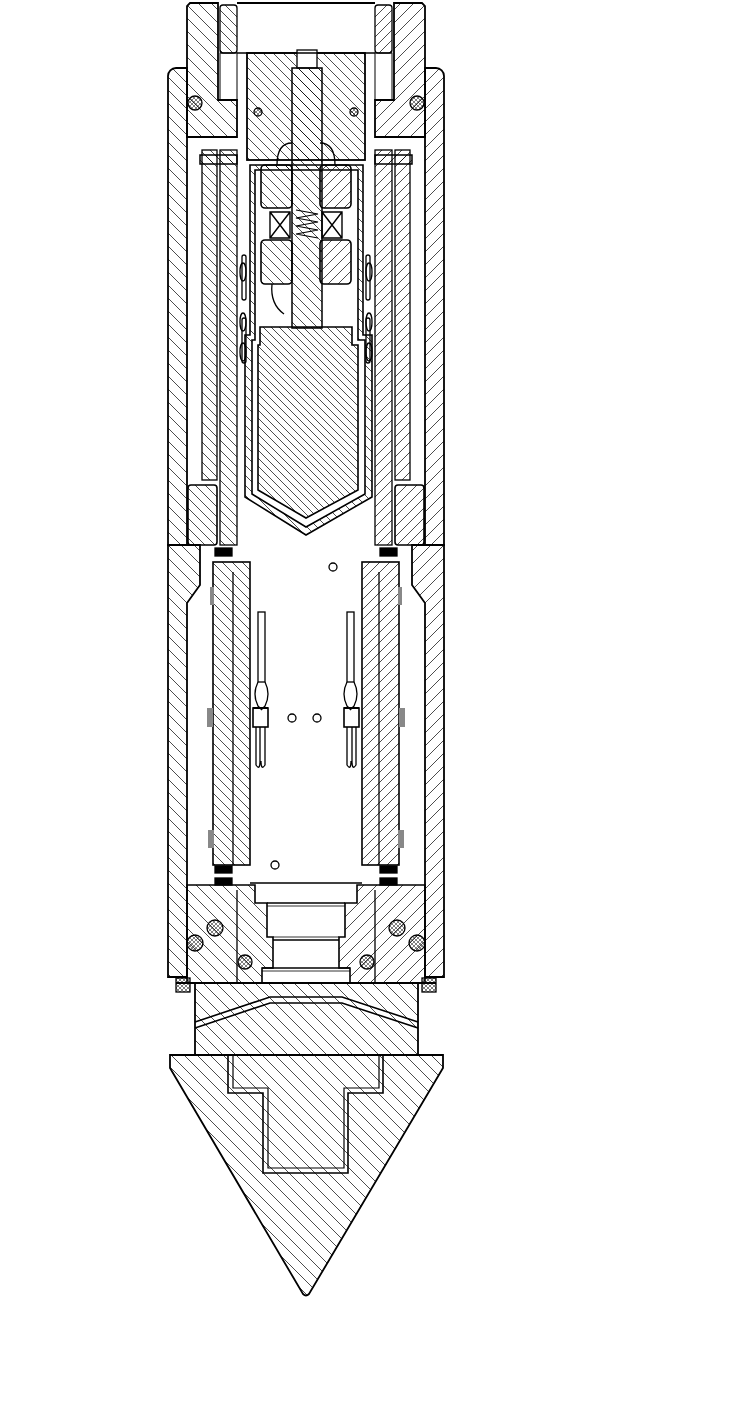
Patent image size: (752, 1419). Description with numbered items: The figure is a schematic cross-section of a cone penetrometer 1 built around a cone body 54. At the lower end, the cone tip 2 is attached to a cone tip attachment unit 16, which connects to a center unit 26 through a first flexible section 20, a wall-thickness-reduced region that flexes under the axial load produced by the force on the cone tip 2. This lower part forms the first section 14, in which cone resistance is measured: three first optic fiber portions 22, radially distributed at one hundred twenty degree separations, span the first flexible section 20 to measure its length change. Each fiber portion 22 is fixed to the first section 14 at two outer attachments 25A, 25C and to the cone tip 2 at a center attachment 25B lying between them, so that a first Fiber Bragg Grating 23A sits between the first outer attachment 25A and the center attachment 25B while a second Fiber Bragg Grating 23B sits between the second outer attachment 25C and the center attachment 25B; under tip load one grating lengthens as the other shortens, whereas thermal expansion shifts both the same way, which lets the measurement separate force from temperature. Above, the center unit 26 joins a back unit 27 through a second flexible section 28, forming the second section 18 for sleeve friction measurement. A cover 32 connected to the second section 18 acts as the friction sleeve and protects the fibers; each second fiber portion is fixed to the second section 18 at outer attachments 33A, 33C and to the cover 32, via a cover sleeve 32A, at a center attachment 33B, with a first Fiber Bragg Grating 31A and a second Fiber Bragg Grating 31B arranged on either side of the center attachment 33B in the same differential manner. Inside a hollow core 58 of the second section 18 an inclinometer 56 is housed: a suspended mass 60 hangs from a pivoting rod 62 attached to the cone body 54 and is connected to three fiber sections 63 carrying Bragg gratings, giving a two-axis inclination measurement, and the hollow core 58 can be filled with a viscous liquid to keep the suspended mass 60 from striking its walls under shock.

The cone penetrometer 1 is at (496, 111).
The cone tip 2 is at (341, 1250).
The first section 14 is at (157, 713).
The cone tip attachment unit 16 is at (210, 1000).
The second section 18 is at (157, 298).
The first flexible section 20 is at (278, 788).
The first optic fiber portions 22 is at (262, 753).
The first Fiber Bragg Grating 23A is at (360, 745).
The second Fiber Bragg Grating 23B is at (358, 689).
The first outer attachment 25A is at (358, 722).
The center attachment 25B is at (358, 714).
The second outer attachment 25C is at (358, 681).
The center unit 26 is at (233, 537).
The back unit 27 is at (196, 50).
The second flexible section 28 is at (383, 372).
The first Fiber Bragg Grating 31A is at (374, 346).
The second Fiber Bragg Grating 31B is at (374, 300).
The cover 32 is at (445, 440).
The cover sleeve 32A is at (402, 403).
The first outer attachment 33A is at (374, 360).
The center attachment 33B is at (374, 322).
The second outer attachment 33C is at (374, 272).
The cone body 54 is at (410, 34).
The inclinometer 56 is at (280, 398).
The hollow core 58 is at (252, 513).
The suspended mass 60 is at (330, 473).
The pivoting rod 62 is at (345, 210).
The fiber sections 63 is at (345, 228).